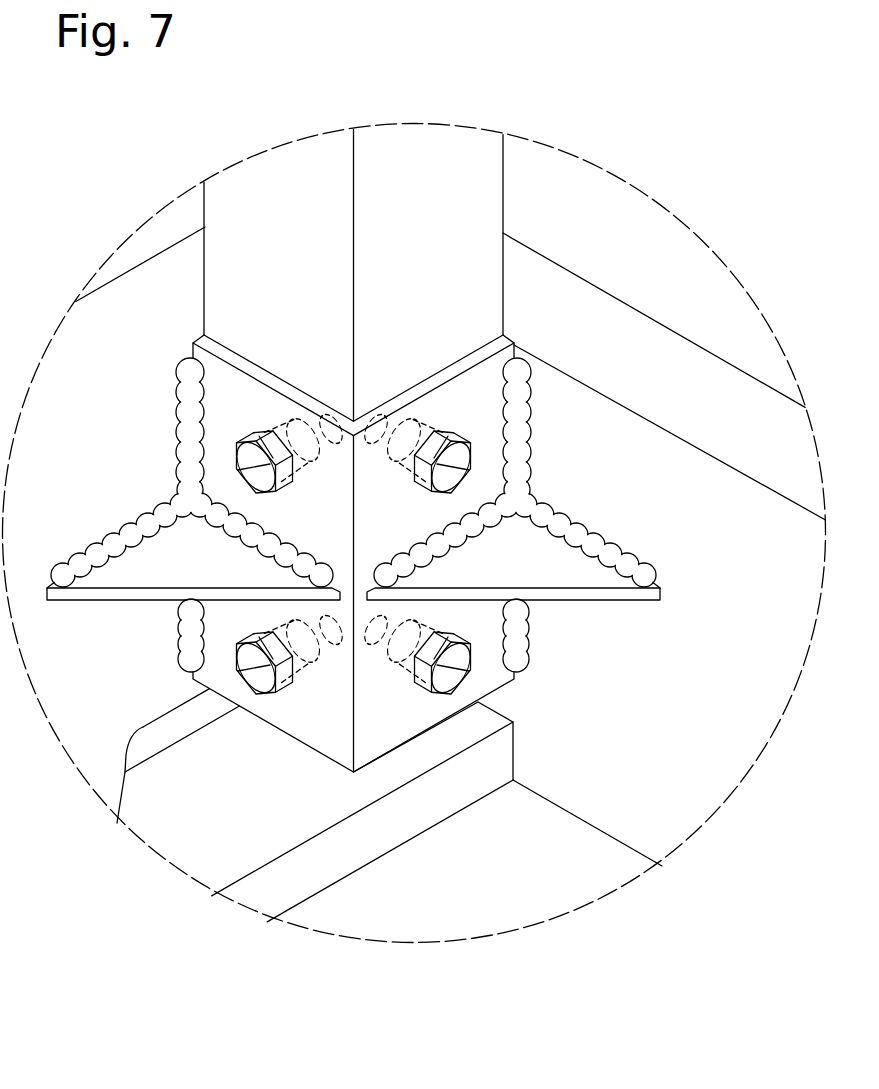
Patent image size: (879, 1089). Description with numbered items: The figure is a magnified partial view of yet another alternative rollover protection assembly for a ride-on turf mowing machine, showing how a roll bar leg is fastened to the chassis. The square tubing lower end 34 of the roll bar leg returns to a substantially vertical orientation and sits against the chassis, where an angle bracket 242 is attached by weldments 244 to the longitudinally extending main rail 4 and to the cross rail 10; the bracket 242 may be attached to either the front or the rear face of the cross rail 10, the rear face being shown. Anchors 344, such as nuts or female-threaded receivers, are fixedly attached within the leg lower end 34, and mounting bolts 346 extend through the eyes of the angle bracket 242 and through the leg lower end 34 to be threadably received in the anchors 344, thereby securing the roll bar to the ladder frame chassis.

The lower end of leg 34 is at (437, 214).
The anchor 344 is at (353, 373).
The mounting bolt 346 is at (353, 604).
The angle bracket 242 is at (192, 491).
The weldment 244 is at (515, 515).
The main rail 4 is at (112, 479).
The cross rail 10 is at (687, 676).